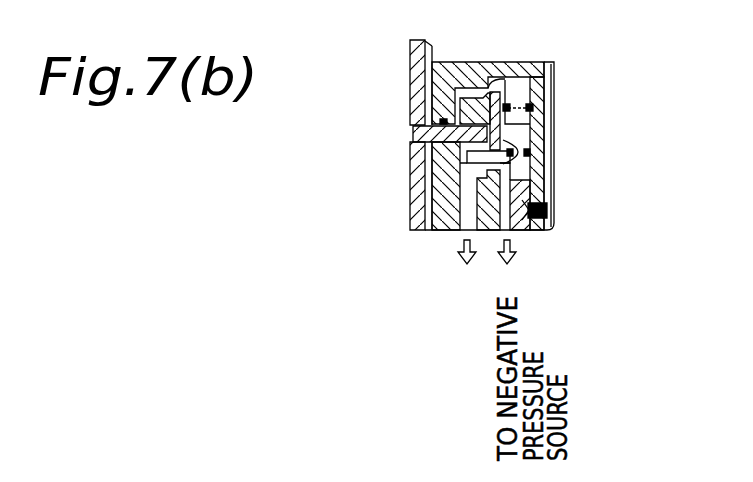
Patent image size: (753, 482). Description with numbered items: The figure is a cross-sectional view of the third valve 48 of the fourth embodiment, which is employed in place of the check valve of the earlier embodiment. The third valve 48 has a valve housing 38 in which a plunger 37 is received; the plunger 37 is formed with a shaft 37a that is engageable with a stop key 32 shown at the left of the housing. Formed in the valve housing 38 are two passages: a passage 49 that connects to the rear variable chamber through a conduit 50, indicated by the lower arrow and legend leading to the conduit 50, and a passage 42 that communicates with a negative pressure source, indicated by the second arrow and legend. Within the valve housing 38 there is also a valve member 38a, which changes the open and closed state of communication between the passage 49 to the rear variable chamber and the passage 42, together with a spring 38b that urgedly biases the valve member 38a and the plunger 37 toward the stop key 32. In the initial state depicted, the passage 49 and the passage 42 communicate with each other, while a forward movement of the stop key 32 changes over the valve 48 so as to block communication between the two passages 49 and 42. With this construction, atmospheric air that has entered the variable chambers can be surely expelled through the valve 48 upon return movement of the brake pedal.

The stop key 32 is at (416, 96).
The plunger 37 is at (448, 205).
The shaft 37a is at (438, 138).
The valve housing 38 is at (455, 73).
The valve member 38a is at (527, 83).
The spring 38b is at (544, 140).
The passage 42 is at (536, 222).
The third valve 48 is at (573, 53).
The passage 49 is at (458, 203).
The conduit 50 is at (468, 297).